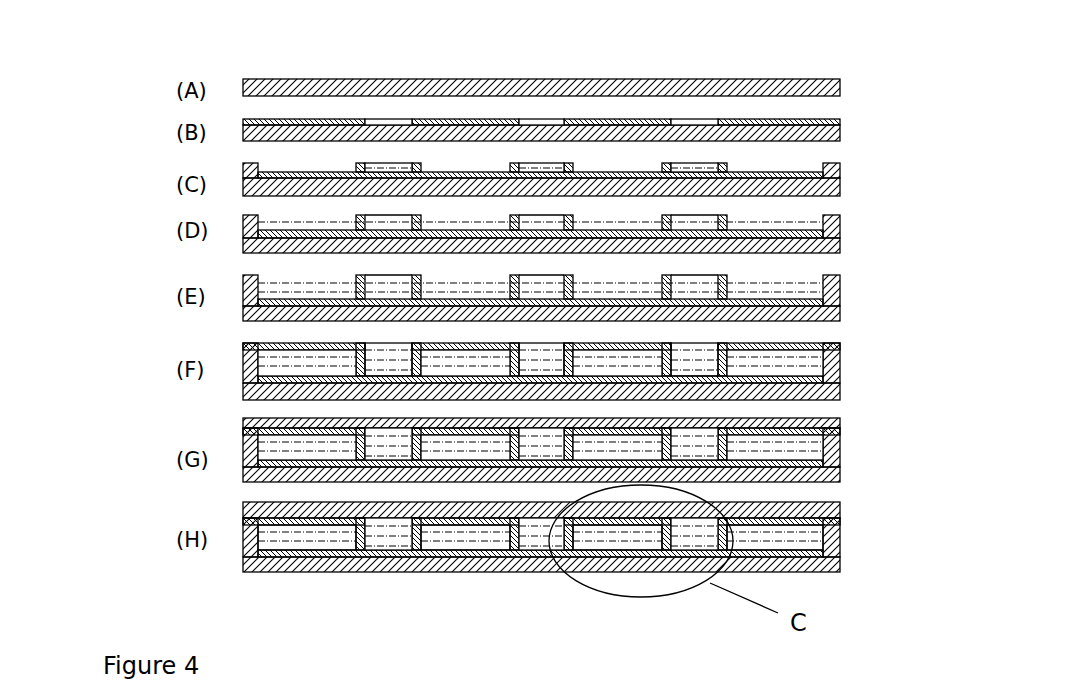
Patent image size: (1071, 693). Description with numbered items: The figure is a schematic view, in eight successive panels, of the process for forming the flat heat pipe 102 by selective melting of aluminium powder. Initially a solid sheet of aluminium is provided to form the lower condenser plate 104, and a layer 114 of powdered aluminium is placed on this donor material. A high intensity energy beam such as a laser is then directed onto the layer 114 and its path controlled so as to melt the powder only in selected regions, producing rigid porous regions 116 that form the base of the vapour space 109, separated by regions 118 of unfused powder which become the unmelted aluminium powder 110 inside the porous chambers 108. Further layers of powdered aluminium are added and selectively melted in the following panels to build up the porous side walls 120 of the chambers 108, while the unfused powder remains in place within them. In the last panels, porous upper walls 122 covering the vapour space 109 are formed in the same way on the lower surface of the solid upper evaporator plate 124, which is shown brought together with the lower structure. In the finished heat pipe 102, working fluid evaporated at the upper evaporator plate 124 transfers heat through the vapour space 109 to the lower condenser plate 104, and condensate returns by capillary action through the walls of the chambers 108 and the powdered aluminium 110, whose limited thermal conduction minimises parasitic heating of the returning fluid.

The flat heat pipe 102 is at (541, 589).
The lower condenser plate 104 is at (480, 572).
The porous chambers 108 is at (688, 165).
The vapour space 109 is at (272, 288).
The unmelted aluminium powder 110 is at (693, 294).
The layer of powdered aluminium 114 is at (346, 121).
The rigid porous regions 116 is at (470, 121).
The regions of unfused powder material 118 is at (543, 122).
The porous side walls 120 is at (725, 280).
The porous upper walls 122 is at (272, 345).
The upper evaporator plate 124 is at (823, 420).